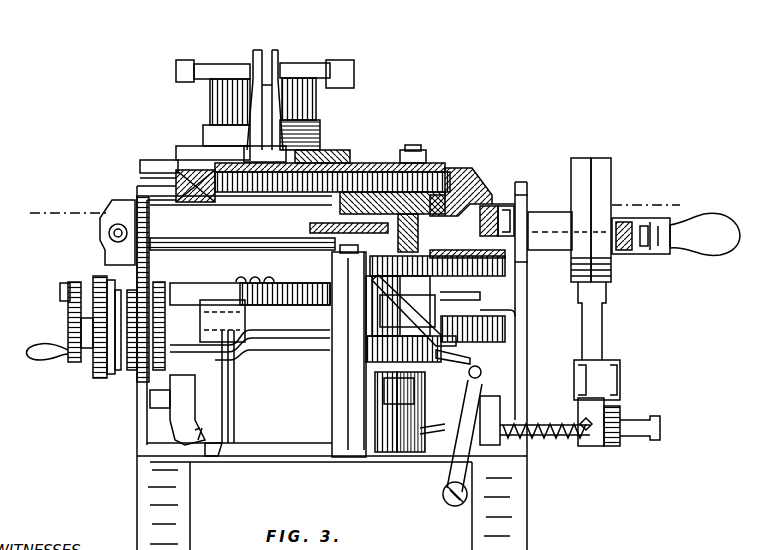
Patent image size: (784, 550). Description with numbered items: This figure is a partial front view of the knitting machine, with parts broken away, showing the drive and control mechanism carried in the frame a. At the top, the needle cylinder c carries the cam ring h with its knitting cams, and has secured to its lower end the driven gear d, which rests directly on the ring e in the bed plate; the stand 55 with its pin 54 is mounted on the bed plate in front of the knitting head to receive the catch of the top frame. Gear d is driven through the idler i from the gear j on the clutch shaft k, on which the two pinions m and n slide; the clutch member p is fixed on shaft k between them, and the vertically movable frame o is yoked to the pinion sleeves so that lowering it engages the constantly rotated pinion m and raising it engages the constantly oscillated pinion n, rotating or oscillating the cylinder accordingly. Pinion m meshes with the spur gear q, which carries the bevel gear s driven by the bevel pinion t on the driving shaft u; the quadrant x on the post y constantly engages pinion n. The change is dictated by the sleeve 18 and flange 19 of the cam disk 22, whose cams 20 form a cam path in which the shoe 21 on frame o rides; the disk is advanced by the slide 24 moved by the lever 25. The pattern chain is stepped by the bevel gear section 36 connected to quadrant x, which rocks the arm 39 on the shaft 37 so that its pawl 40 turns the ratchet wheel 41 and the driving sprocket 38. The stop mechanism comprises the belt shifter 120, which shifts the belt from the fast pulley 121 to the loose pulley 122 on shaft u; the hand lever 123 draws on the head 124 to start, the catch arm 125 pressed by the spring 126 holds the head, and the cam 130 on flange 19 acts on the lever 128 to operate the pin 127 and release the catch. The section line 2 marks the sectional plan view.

The frame a is at (137, 487).
The needle cylinder c is at (212, 108).
The cam ring h is at (203, 137).
The ring e is at (192, 170).
The pin 54 is at (266, 64).
The stand 55 is at (258, 80).
The cam disk 22 is at (140, 178).
The driven gear d is at (330, 162).
The idler i is at (360, 170).
The gear j is at (436, 175).
The clutch shaft k is at (466, 180).
The bevel pinion t is at (488, 212).
The driving shaft u is at (545, 226).
The fast pulley 121 is at (580, 158).
The loose pulley 122 is at (603, 158).
The section line 2- 2 is at (361, 199).
The spur gear q is at (508, 270).
The lever 25 is at (124, 215).
The slide 24 is at (108, 234).
The sleeve 18 is at (216, 243).
The flange 19 is at (215, 288).
The cam 130 is at (282, 296).
The cams 20 is at (250, 305).
The shoe 21 is at (334, 303).
The quadrant x is at (280, 355).
The post y is at (240, 402).
The frame o is at (335, 345).
The pinion m is at (434, 280).
The clutch member p is at (438, 296).
The cam-actuated lever 128 is at (316, 276).
The pinion n is at (446, 354).
The pin 127 is at (492, 374).
The hand lever 123 is at (446, 432).
The head 124 is at (492, 404).
The belt shifter 120 is at (585, 446).
The spring 126 is at (372, 432).
The catch arm 125 is at (398, 456).
The bevel gear section 36 is at (216, 455).
The arm 39 is at (183, 420).
The pawl 40 is at (150, 394).
The ratchet wheel 41 is at (160, 370).
The driving sprocket 38 is at (96, 360).
The shaft 37 is at (70, 318).
The bevel gear s is at (452, 262).